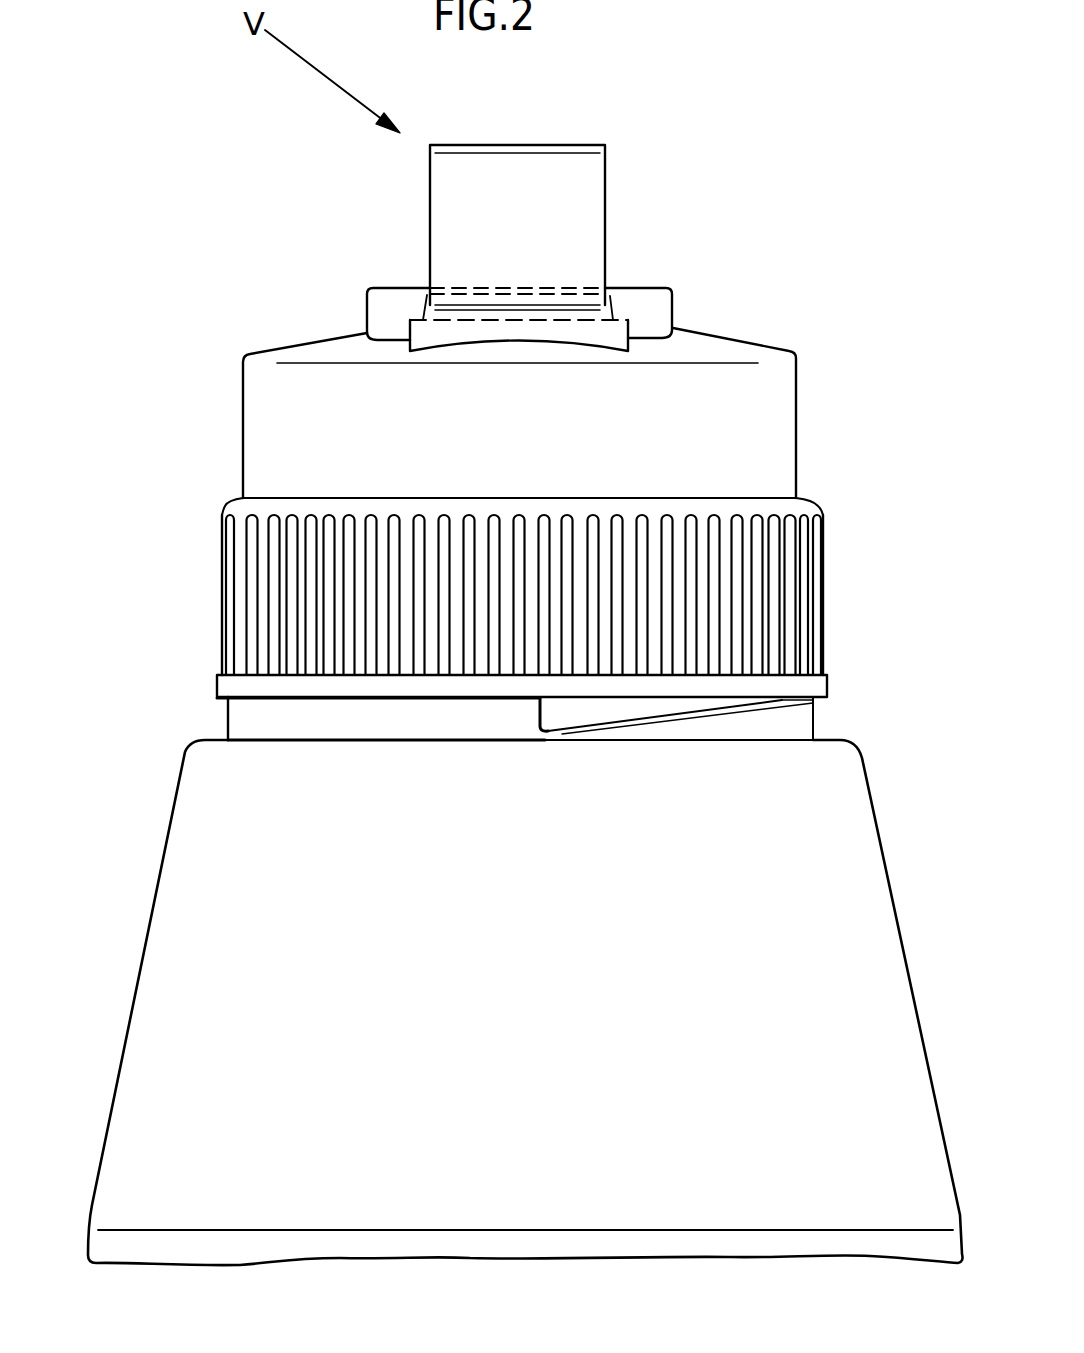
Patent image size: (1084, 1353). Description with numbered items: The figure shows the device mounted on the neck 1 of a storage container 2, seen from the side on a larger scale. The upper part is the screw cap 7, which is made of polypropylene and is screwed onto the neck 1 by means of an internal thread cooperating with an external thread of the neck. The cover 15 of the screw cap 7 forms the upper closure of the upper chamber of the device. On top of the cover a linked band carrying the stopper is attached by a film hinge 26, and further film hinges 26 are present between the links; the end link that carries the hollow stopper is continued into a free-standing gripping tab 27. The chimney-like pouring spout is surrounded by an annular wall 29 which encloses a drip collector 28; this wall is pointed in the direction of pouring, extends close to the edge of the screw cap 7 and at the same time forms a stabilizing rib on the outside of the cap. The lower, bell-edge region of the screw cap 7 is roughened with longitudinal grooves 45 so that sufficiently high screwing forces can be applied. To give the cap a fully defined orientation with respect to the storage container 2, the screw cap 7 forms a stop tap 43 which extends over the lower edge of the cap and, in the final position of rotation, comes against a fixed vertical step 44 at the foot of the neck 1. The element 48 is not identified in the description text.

The neck 1 is at (815, 718).
The storage container 2 is at (892, 887).
The screw cap 7 is at (797, 350).
The cover 15 is at (332, 355).
The film hinge 26 is at (555, 145).
The gripping tab 27 is at (607, 185).
The drip collector 28 is at (405, 305).
The annular wall 29 is at (367, 312).
The stop tap 43 is at (572, 740).
The vertical step 44 is at (542, 720).
The grooves 45 is at (823, 542).
The closure plate 48 is at (612, 307).